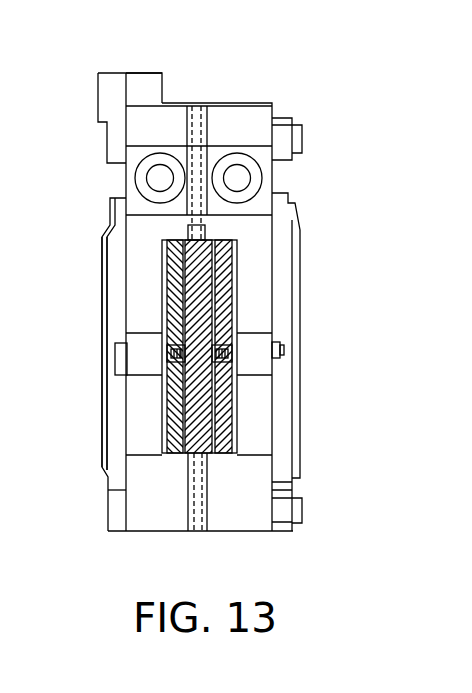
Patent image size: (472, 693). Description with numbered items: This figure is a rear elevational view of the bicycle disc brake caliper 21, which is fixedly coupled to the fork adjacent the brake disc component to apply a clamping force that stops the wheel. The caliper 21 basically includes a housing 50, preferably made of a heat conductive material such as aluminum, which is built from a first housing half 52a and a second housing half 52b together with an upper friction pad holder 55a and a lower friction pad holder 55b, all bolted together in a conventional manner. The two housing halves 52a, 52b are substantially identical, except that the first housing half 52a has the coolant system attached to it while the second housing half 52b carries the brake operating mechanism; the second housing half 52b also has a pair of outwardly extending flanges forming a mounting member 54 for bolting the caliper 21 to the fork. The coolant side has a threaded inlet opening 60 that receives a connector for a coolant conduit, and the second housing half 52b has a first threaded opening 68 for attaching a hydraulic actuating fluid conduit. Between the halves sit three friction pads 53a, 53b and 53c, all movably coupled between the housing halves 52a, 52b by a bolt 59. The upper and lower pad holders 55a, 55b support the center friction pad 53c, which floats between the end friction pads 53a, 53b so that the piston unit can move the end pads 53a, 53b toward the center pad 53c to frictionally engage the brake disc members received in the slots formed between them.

The disc brake caliper 21 is at (86, 167).
The housing 50 is at (271, 103).
The mounting member 54 is at (150, 80).
The upper friction pad holder 55a is at (200, 157).
The lower friction pad holder 55b is at (200, 513).
The first threaded opening 68 is at (138, 187).
The inlet opening 60 is at (250, 178).
The first housing half 52a is at (303, 270).
The second housing half 52b is at (103, 288).
The bolt 59 is at (118, 378).
The friction pad 53b is at (168, 393).
The center friction pad 53c is at (190, 417).
The friction pad 53a is at (230, 417).